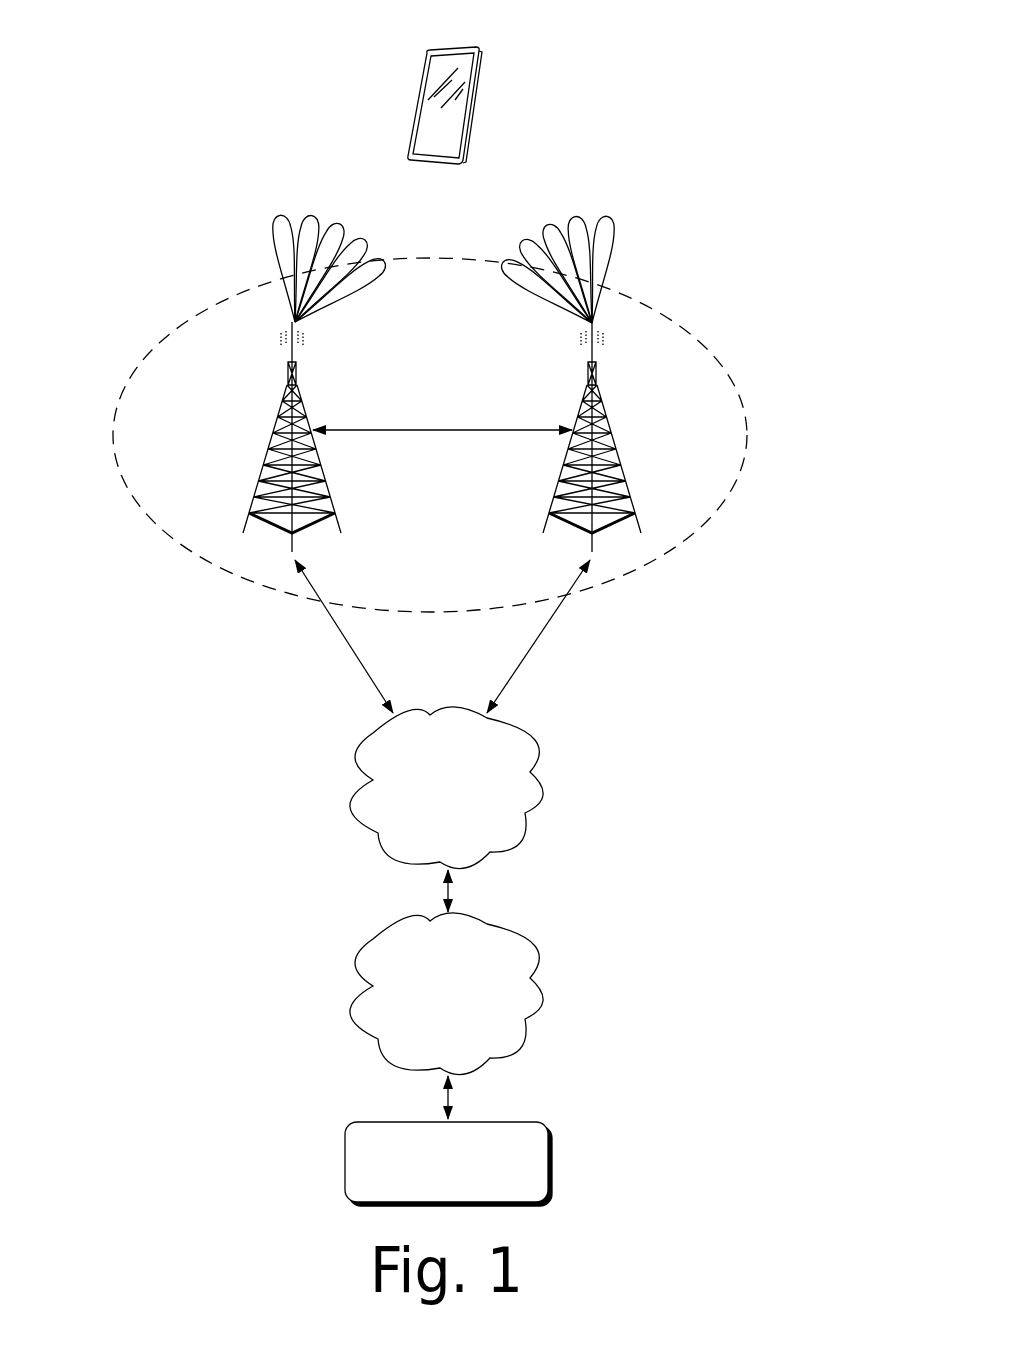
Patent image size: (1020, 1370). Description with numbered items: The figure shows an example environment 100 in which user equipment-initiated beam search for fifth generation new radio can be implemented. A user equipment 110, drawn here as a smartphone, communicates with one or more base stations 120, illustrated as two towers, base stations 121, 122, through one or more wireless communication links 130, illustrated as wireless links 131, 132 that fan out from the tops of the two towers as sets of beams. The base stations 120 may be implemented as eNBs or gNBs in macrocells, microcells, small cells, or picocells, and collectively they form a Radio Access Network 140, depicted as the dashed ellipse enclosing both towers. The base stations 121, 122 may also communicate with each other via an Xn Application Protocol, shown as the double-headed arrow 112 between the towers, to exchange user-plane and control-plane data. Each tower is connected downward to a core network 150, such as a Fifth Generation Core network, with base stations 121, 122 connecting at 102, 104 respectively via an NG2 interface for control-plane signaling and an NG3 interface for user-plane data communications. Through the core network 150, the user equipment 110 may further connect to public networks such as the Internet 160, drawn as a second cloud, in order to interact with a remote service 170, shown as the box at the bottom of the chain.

The example environment 100 is at (160, 32).
The connection of base station 121 to core network 102 is at (355, 648).
The connection of base station 122 to core network 104 is at (502, 680).
The user equipment 110 is at (487, 47).
The Xn Application Protocol communication 112 is at (410, 425).
The base stations 120 is at (458, 337).
The base station 121 is at (278, 413).
The base station 122 is at (607, 412).
The wireless communication links 130 is at (488, 180).
The wireless link 131 is at (277, 210).
The wireless link 132 is at (607, 210).
The Radio Access Network 140 is at (727, 360).
The core network 150 is at (430, 805).
The Internet 160 is at (430, 1011).
The remote service 170 is at (430, 1185).